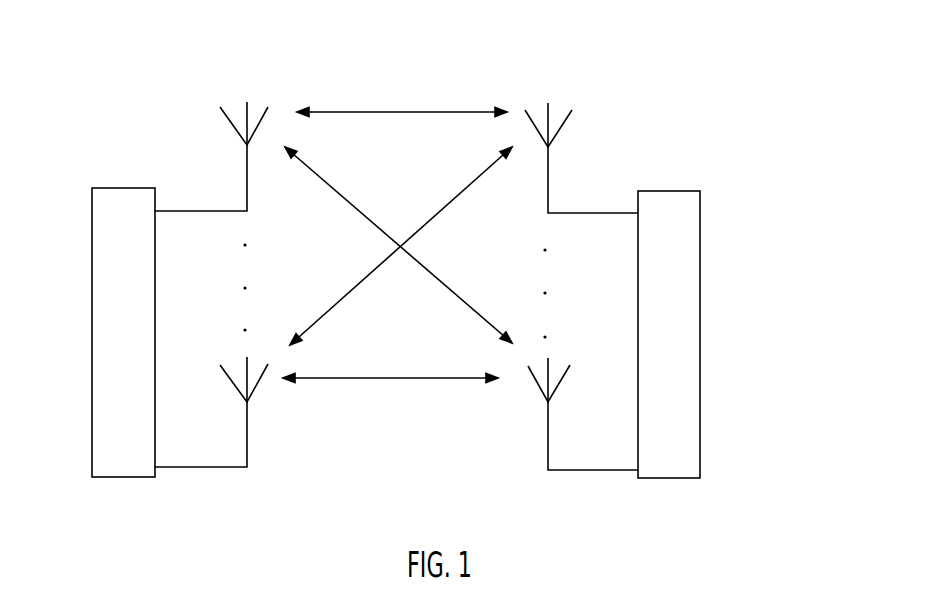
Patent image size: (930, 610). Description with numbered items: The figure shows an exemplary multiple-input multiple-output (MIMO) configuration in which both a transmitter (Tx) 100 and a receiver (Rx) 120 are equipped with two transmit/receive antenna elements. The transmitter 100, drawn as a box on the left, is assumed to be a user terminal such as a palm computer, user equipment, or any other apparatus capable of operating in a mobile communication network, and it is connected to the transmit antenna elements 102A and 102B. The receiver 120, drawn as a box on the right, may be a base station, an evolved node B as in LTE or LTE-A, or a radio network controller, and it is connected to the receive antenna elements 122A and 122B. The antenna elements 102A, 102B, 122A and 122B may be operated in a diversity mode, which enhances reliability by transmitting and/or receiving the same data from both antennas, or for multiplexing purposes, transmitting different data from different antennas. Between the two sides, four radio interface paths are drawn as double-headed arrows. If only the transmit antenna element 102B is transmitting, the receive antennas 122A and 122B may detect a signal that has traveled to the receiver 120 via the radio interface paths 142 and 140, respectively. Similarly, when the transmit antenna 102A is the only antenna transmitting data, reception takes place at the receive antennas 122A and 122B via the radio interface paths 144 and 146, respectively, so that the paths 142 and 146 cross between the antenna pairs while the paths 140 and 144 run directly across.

The transmitter (Tx) 100 is at (92, 265).
The receiver (Rx) 120 is at (700, 277).
The transmit antenna element 102A is at (223, 373).
The transmit antenna element 102B is at (223, 113).
The receive antenna element 122A is at (573, 373).
The receive antenna element 122B is at (570, 113).
The radio interface path 140 is at (425, 112).
The radio interface path 142 is at (358, 210).
The radio interface path 144 is at (445, 378).
The radio interface path 146 is at (467, 185).